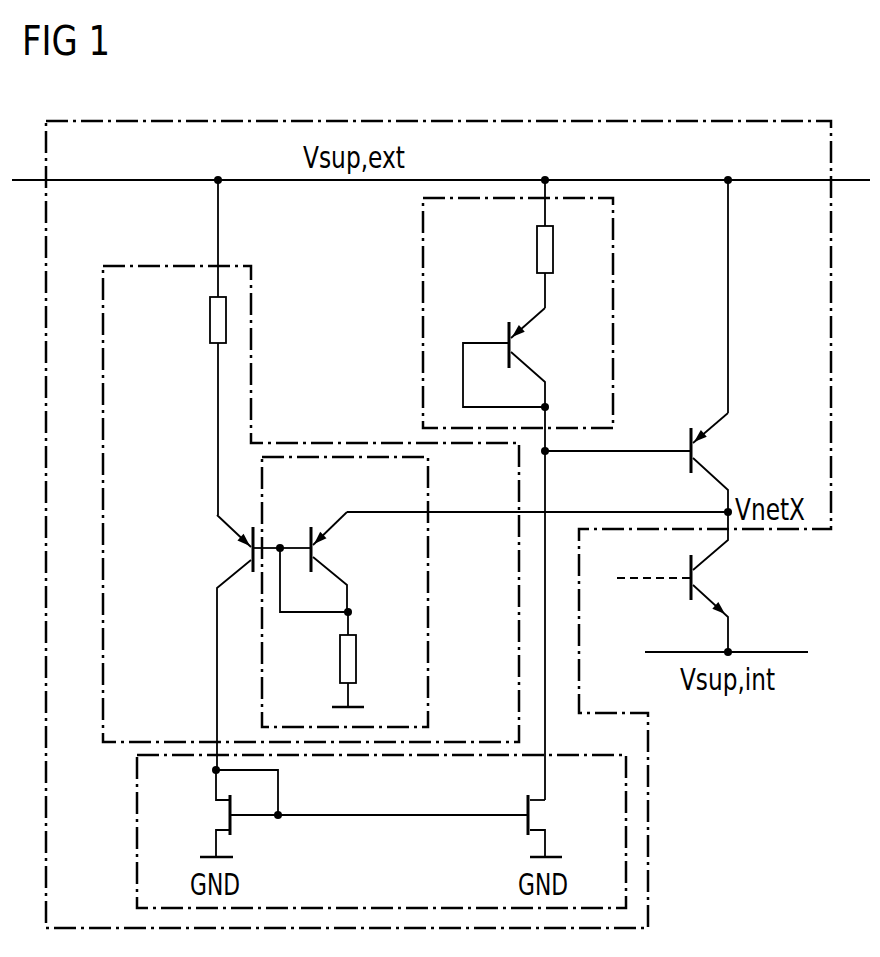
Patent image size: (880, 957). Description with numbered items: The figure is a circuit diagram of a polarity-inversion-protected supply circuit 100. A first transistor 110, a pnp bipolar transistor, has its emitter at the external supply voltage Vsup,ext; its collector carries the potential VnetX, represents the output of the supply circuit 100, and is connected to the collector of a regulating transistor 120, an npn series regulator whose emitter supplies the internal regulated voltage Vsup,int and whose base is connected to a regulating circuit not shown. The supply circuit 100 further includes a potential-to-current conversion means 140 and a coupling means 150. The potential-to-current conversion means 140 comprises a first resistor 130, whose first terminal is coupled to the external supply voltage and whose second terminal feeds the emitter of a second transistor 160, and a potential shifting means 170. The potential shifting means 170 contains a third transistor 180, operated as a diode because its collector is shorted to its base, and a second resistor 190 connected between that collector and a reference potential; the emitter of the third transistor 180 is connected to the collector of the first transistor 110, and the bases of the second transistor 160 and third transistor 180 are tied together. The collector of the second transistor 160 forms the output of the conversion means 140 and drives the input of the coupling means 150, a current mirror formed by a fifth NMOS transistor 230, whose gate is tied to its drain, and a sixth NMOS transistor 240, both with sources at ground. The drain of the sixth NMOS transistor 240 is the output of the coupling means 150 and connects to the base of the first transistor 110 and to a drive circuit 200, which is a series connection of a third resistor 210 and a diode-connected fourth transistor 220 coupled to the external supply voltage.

The polarity-inversion-protected supply circuit 100 is at (656, 121).
The first transistor 110 is at (698, 441).
The regulating transistor 120 is at (698, 571).
The first resistor 130 is at (208, 322).
The potential-to-current conversion means 140 is at (252, 337).
The coupling means 150 is at (136, 845).
The second transistor 160 is at (248, 549).
The potential shifting means 170 is at (429, 645).
The third transistor 180 is at (318, 548).
The second resistor 190 is at (339, 655).
The drive circuit 200 is at (614, 262).
The third resistor 210 is at (536, 258).
The fourth transistor 220 is at (514, 343).
The fifth NMOS transistor 230 is at (233, 825).
The sixth NMOS transistor 240 is at (526, 822).